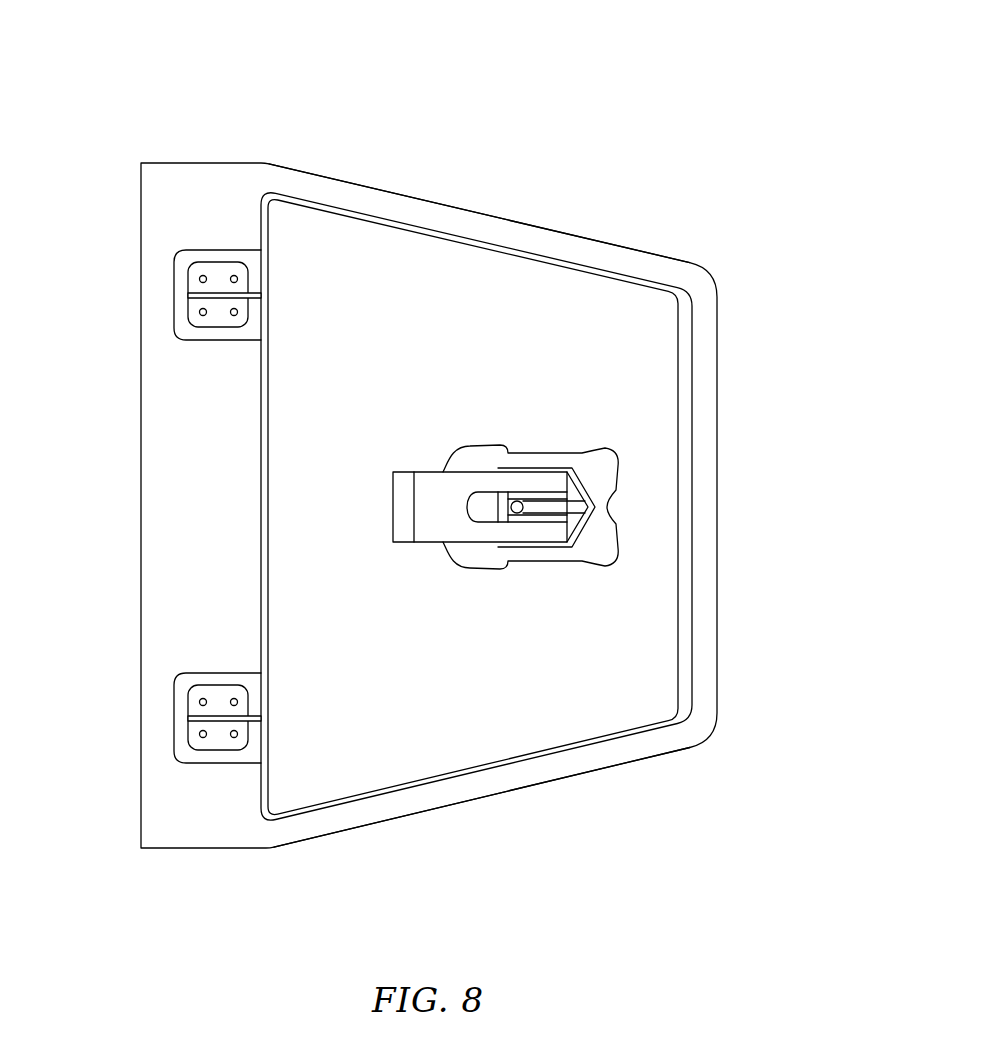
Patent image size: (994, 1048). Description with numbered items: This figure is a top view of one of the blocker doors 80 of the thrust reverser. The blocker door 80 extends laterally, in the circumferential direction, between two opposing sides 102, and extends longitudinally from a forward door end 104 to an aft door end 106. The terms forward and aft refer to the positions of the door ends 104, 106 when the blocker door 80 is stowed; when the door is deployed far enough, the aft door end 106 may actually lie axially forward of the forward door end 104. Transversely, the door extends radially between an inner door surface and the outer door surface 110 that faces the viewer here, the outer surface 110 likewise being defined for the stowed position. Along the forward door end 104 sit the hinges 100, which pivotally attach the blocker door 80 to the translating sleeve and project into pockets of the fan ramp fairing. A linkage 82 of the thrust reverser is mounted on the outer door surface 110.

The blocker door 80 is at (698, 102).
The linkage 82 is at (578, 507).
The hinge 100 is at (217, 298).
The opposing sides 102 is at (388, 193).
The forward door end 104 is at (141, 555).
The aft door end 106 is at (717, 373).
The outer door surface 110 is at (654, 318).